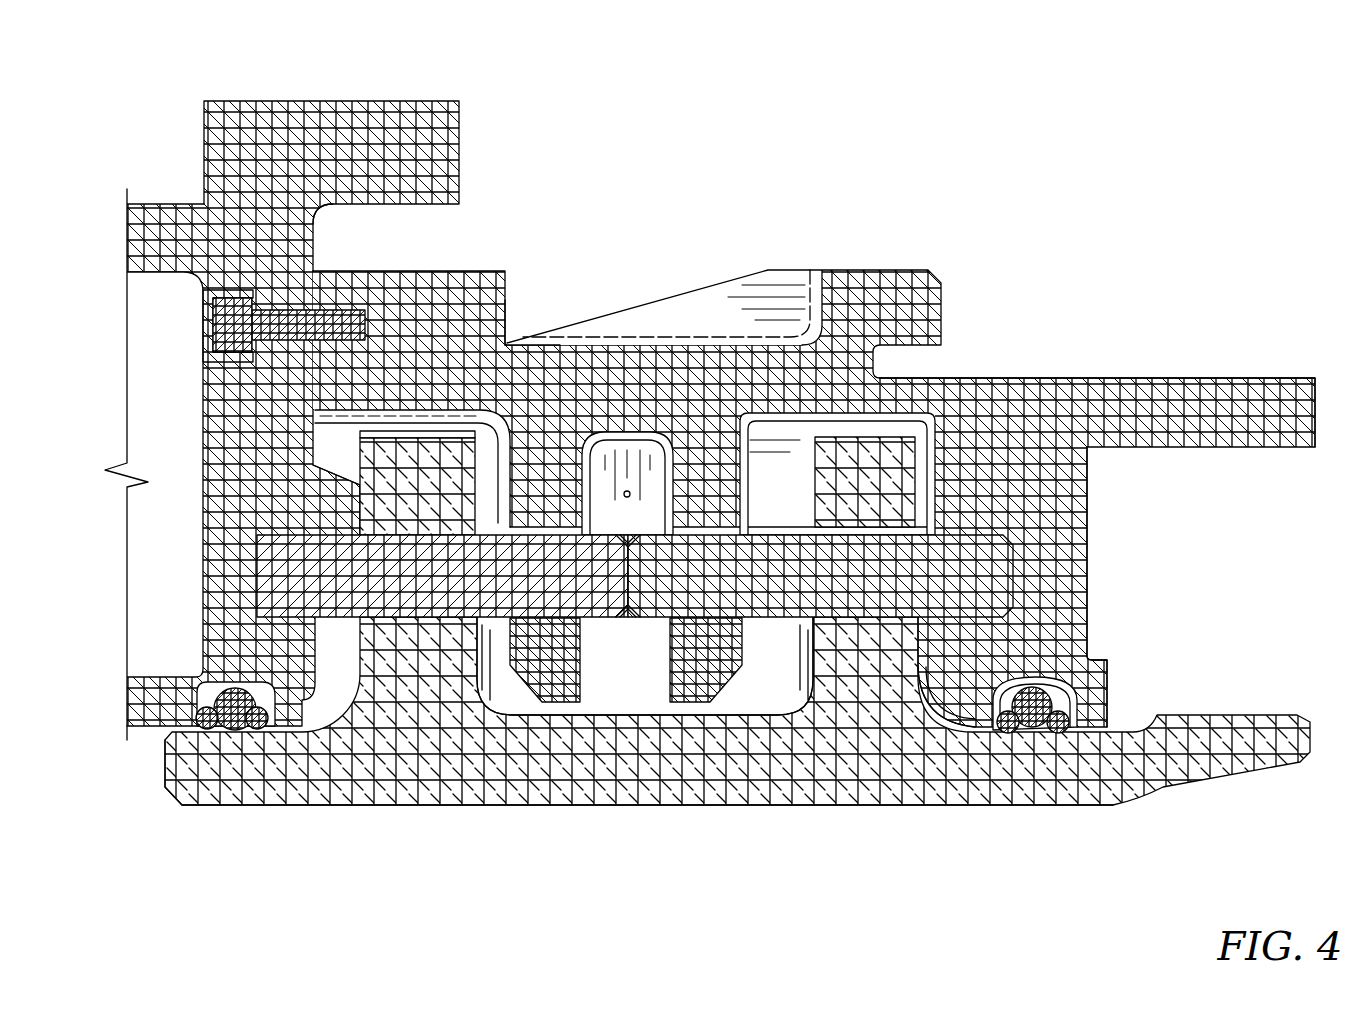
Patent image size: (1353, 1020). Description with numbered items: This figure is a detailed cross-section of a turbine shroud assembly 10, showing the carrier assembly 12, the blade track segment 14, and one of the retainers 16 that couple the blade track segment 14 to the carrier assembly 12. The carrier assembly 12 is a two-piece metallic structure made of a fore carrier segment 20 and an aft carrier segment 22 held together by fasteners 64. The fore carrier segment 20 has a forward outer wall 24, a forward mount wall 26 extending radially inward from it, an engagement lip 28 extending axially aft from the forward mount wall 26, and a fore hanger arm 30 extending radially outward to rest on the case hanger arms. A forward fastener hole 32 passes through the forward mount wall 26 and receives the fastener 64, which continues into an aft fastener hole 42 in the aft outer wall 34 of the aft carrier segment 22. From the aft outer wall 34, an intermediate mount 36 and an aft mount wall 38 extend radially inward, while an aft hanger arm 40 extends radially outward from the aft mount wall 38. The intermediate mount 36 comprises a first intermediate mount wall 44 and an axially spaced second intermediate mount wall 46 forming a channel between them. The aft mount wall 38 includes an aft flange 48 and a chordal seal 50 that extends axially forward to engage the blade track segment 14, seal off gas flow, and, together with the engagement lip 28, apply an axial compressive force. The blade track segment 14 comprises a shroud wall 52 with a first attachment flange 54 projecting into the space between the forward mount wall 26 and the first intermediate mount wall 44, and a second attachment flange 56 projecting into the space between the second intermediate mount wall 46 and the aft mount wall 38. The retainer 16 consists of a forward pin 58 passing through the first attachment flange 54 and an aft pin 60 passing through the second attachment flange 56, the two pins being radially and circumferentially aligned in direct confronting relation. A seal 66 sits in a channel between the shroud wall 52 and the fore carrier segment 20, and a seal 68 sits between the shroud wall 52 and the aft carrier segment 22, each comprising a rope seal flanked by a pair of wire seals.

The turbine shroud assembly 10 is at (686, 482).
The carrier assembly 12 is at (1228, 352).
The blade track segment 14 is at (168, 805).
The retainer 16 is at (762, 632).
The fore carrier segment 20 is at (195, 423).
The aft carrier segment 22 is at (512, 337).
The forward outer wall 24 is at (223, 227).
The forward mount wall 26 is at (220, 480).
The engagement lip 28 is at (335, 502).
The fore hanger arm 30 is at (395, 148).
The forward fastener hole 32 is at (268, 374).
The aft outer wall 34 is at (685, 377).
The intermediate mount 36 is at (731, 700).
The aft mount wall 38 is at (993, 467).
The aft hanger arm 40 is at (900, 318).
The aft fastener hole 42 is at (337, 317).
The first intermediate mount wall 44 is at (550, 470).
The second intermediate mount wall 46 is at (718, 453).
The aft flange 48 is at (1067, 537).
The chordal seal 50 is at (923, 667).
The shroud wall 52 is at (508, 775).
The first attachment flange 54 is at (397, 452).
The second attachment flange 56 is at (893, 483).
The forward pin 58 is at (387, 592).
The aft pin 60 is at (822, 592).
The fastener 64 is at (235, 317).
The seal 66 is at (228, 742).
The seal 68 is at (1033, 742).